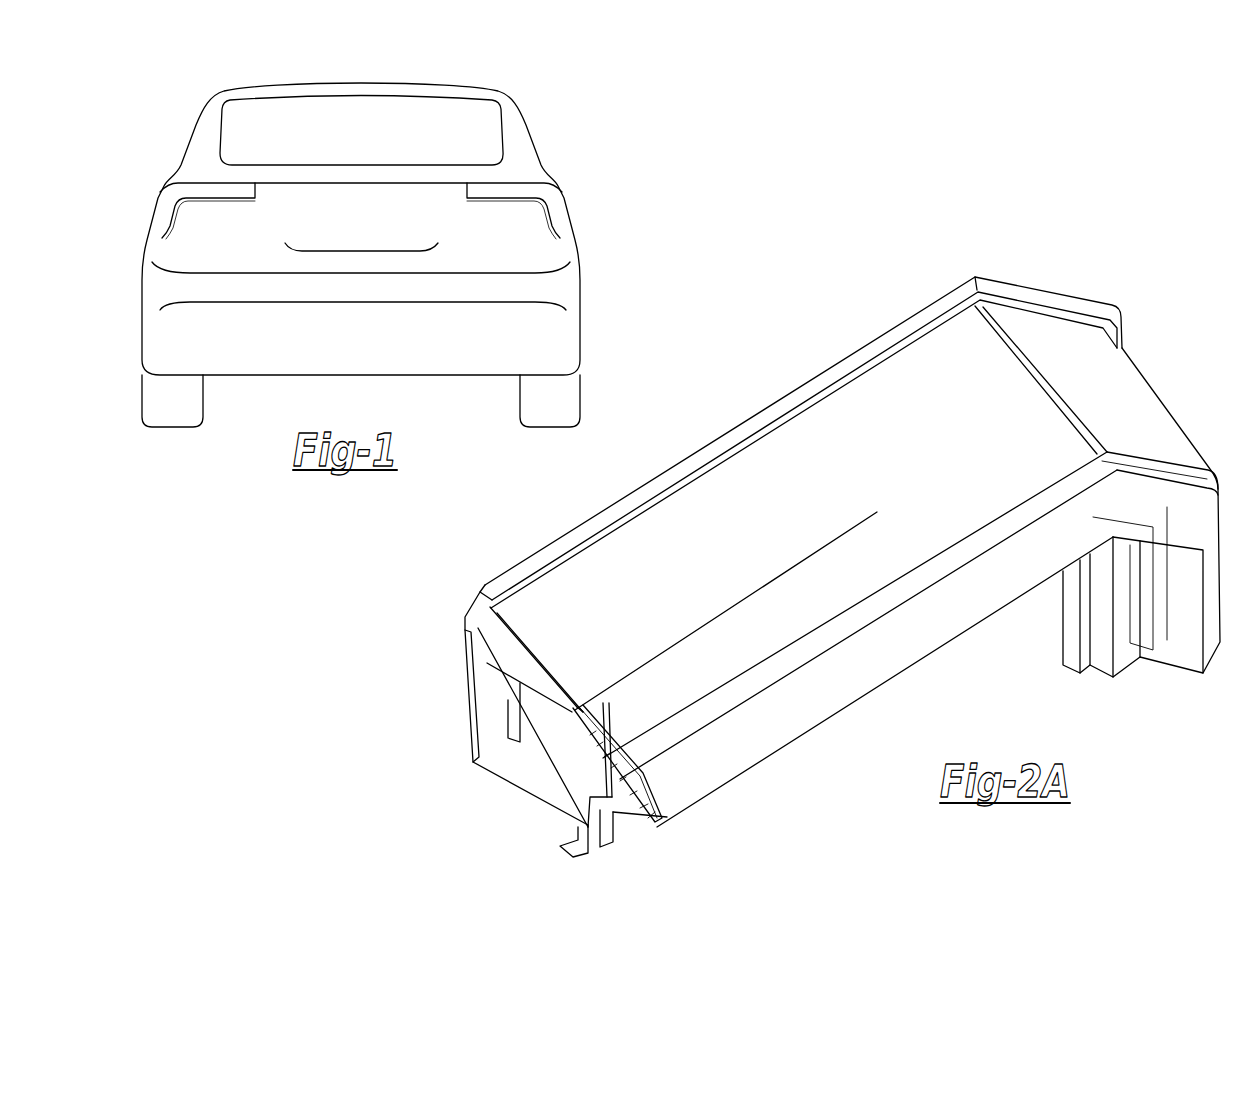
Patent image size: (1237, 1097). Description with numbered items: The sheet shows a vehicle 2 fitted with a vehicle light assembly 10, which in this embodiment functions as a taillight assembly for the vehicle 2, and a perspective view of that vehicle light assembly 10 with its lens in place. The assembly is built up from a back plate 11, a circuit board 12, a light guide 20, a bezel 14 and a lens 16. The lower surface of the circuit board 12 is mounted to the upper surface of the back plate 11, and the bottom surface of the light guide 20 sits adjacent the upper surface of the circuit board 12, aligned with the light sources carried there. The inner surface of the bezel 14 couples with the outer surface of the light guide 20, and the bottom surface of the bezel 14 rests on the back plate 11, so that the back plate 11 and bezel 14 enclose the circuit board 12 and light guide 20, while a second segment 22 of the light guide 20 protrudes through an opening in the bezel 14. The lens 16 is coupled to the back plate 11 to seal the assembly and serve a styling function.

In FIG. 1, the vehicle 2 is at (560, 82).
In FIG. 1, the vehicle light assembly 10 is at (196, 179).
In FIG. 2A, the back plate 11 is at (553, 797).
In FIG. 2A, the circuit board 12 is at (518, 733).
In FIG. 2A, the bezel 14 is at (520, 687).
In FIG. 2A, the lens 16 is at (743, 753).
In FIG. 2A, the light guide 20 is at (636, 788).
In FIG. 2A, the second segment 22 is at (578, 732).